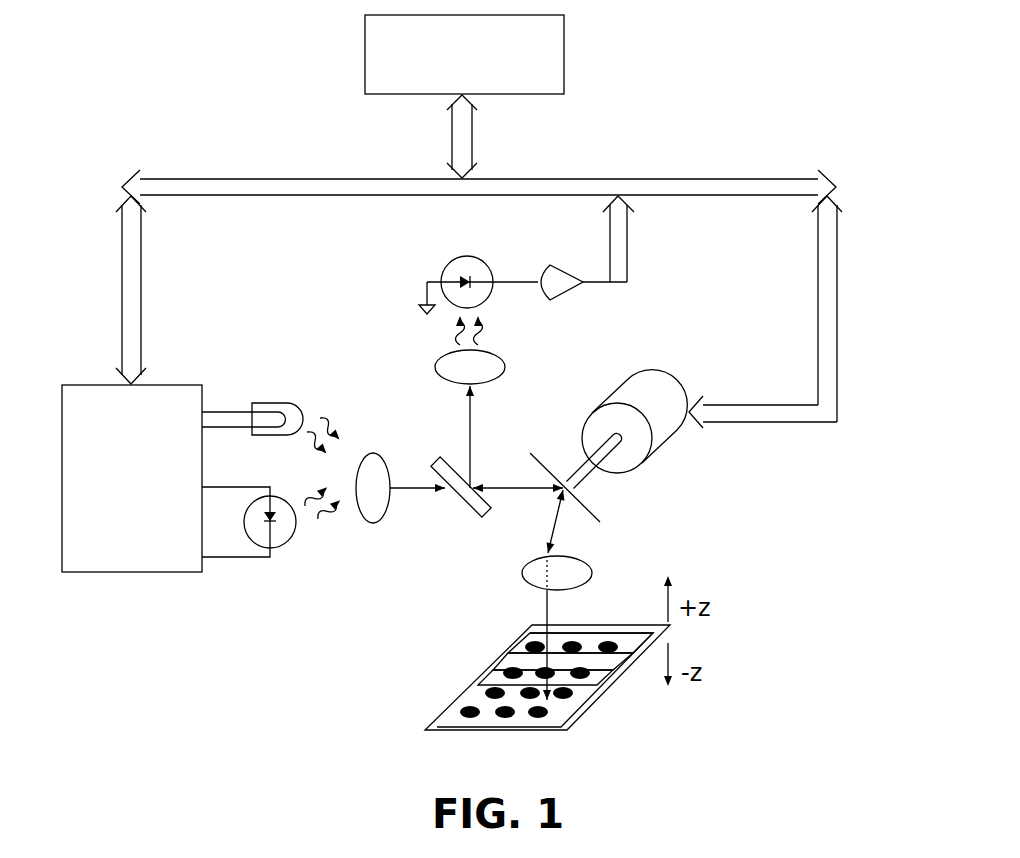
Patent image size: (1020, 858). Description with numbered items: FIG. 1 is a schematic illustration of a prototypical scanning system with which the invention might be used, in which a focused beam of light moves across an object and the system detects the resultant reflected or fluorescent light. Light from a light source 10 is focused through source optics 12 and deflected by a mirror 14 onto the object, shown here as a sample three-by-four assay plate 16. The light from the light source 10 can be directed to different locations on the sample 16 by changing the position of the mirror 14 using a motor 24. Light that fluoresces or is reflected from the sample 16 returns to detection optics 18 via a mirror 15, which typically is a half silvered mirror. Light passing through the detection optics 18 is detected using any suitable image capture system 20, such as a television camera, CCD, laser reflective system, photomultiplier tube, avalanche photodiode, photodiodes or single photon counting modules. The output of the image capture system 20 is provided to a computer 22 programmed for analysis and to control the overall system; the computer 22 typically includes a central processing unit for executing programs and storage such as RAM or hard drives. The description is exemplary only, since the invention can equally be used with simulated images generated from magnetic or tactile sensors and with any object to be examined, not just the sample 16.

The light source 10 is at (290, 380).
The source optics 12 is at (378, 452).
The mirror 14 is at (592, 512).
The mirror 15 is at (464, 505).
The assay plate 16 is at (508, 640).
The detection optics 18 is at (506, 366).
The image capture system 20 is at (445, 262).
The computer 22 is at (564, 70).
The motor 24 is at (655, 380).